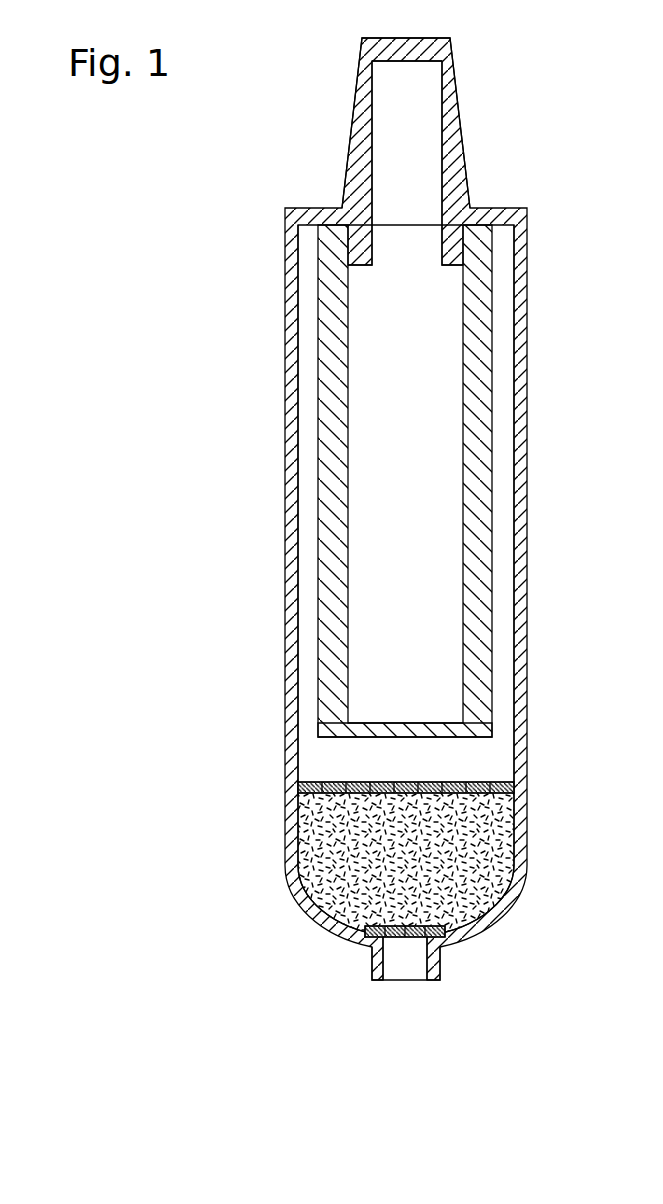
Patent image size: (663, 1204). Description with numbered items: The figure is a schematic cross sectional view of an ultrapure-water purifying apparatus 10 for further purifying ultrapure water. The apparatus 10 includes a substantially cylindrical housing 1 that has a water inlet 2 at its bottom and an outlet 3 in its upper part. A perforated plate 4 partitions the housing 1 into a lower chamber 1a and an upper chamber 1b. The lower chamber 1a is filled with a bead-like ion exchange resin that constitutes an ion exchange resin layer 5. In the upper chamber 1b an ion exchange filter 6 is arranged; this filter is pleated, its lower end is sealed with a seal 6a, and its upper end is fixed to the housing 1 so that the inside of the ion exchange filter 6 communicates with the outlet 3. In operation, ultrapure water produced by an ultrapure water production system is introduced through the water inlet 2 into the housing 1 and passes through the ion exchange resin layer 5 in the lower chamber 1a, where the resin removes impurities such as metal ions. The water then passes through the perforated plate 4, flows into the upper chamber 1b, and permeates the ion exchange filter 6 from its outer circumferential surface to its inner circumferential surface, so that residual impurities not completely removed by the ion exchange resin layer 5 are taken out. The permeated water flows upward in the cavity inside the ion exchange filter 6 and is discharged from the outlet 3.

The housing 1 is at (527, 600).
The lower chamber 1a is at (302, 823).
The upper chamber 1b is at (312, 665).
The water inlet 2 is at (413, 982).
The outlet 3 is at (462, 112).
The perforated plate 4 is at (502, 783).
The ion exchange resin layer 5 is at (505, 830).
The ion exchange filter 6 is at (493, 480).
The seal 6a is at (387, 723).
The ultrapure-water purifying apparatus 10 is at (267, 383).